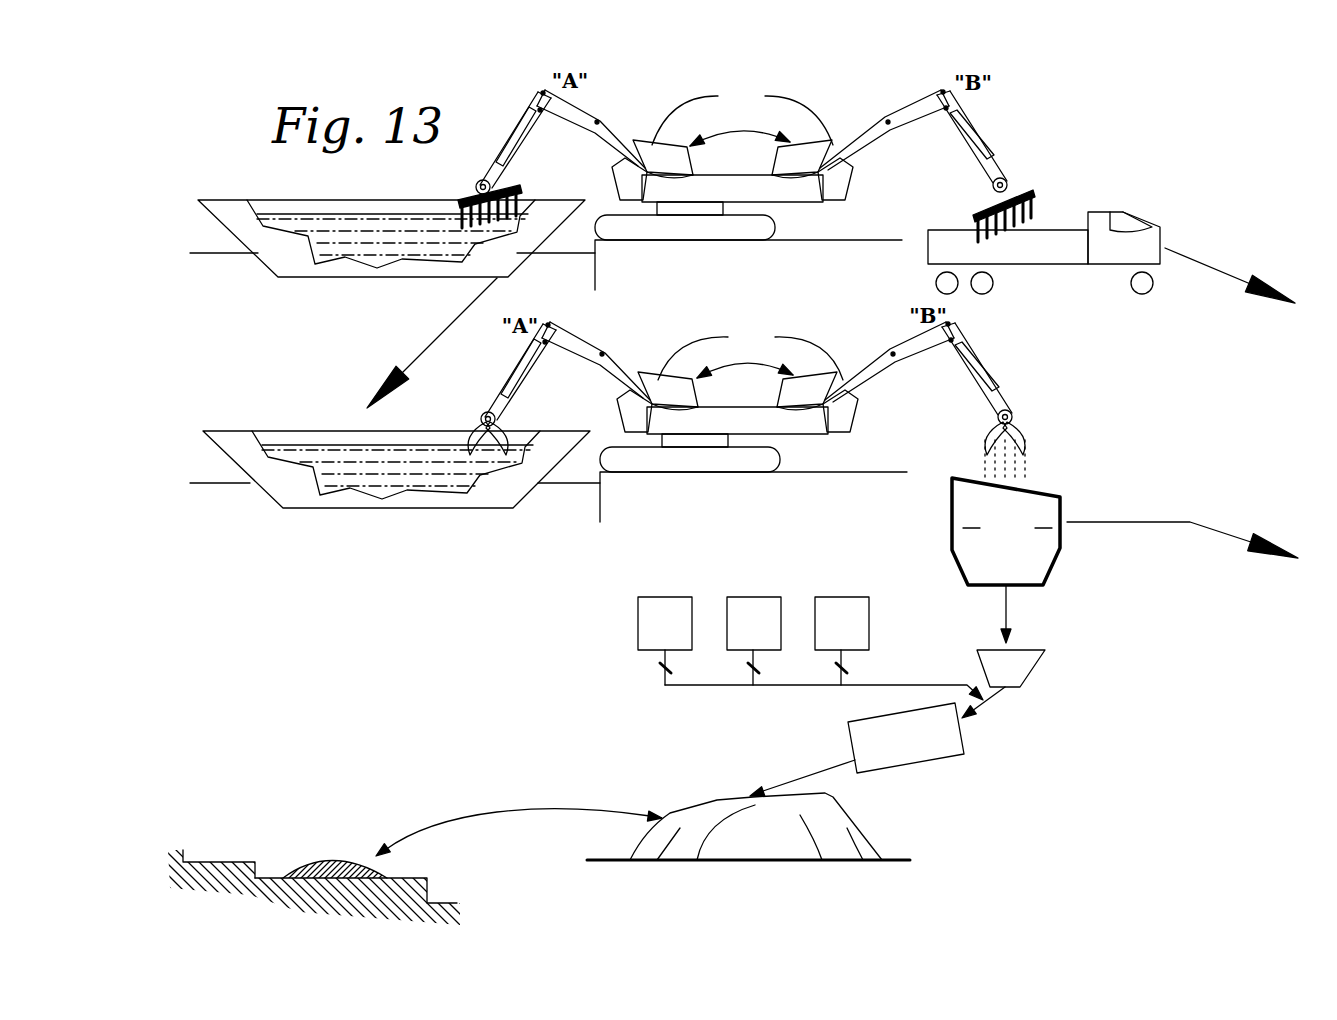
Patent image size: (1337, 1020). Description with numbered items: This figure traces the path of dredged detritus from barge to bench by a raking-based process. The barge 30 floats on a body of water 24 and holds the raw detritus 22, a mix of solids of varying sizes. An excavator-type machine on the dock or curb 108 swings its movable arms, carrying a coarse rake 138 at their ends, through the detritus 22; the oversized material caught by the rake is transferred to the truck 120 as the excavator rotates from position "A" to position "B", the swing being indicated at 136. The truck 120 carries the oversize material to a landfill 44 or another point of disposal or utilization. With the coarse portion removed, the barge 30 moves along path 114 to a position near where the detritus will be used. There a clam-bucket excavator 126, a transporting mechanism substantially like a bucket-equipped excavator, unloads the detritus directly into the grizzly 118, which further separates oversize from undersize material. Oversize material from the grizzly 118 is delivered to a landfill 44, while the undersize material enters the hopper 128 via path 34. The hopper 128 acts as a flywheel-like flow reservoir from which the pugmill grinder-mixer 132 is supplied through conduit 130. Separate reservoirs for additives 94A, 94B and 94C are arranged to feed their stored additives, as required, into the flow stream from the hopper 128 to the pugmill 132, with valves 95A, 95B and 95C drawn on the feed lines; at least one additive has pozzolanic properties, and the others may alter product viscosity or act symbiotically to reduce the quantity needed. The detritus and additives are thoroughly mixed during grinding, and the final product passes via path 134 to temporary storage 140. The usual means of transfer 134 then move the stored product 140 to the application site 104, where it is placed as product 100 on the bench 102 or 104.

The detritus 22 is at (450, 248).
The body of water 24 is at (550, 258).
The barge 30 is at (317, 278).
The path 34 is at (1007, 626).
The landfill 44 is at (1186, 421).
The additive reservoir 94A is at (668, 605).
The additive reservoir 94B is at (757, 605).
The additive reservoir 94C is at (845, 605).
The valve A 95A is at (674, 670).
The valve B 95B is at (762, 670).
The valve C 95C is at (850, 670).
The product 100 is at (335, 858).
The bench 102 is at (203, 862).
The application site 104 is at (410, 880).
The dock or curb 108 is at (960, 686).
The path 114 is at (443, 328).
The grizzly 118 is at (507, 420).
The truck 120 is at (1007, 257).
The clam-bucket excavator 126 is at (750, 353).
The hopper 128 is at (1030, 673).
The conduit 130 is at (975, 712).
The pugmill grinder-mixer 132 is at (912, 755).
The path 134 is at (525, 817).
The excavator swing motion 136 is at (742, 117).
The coarse rake 138 is at (507, 200).
The temporary storage 140 is at (848, 825).